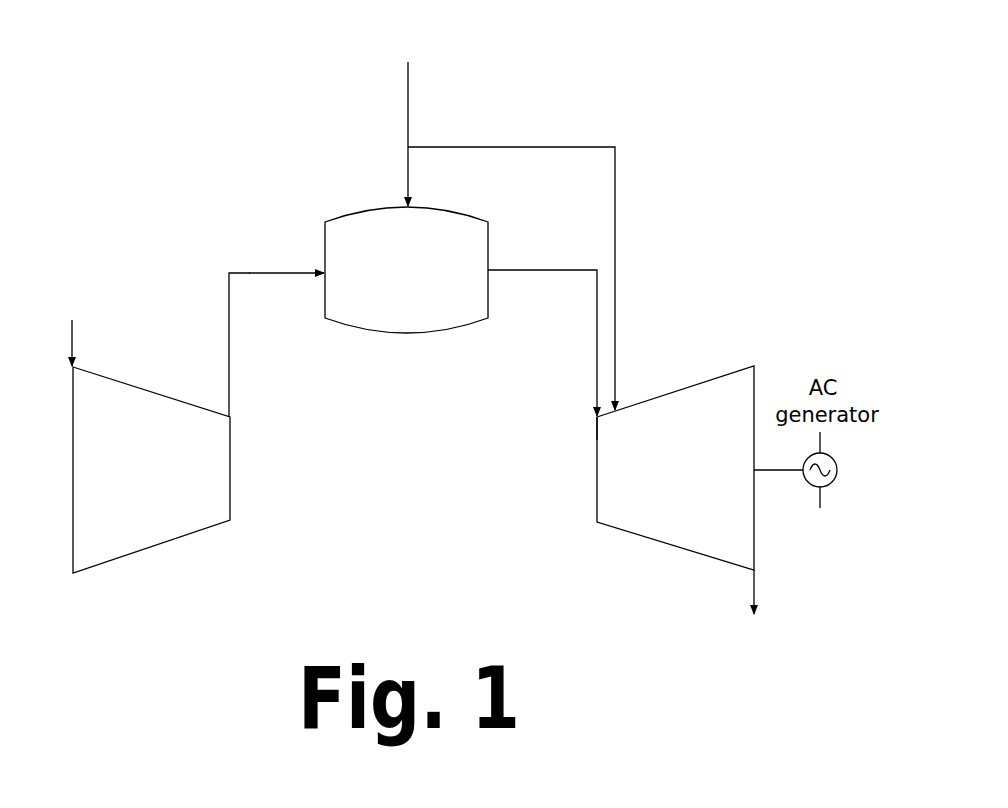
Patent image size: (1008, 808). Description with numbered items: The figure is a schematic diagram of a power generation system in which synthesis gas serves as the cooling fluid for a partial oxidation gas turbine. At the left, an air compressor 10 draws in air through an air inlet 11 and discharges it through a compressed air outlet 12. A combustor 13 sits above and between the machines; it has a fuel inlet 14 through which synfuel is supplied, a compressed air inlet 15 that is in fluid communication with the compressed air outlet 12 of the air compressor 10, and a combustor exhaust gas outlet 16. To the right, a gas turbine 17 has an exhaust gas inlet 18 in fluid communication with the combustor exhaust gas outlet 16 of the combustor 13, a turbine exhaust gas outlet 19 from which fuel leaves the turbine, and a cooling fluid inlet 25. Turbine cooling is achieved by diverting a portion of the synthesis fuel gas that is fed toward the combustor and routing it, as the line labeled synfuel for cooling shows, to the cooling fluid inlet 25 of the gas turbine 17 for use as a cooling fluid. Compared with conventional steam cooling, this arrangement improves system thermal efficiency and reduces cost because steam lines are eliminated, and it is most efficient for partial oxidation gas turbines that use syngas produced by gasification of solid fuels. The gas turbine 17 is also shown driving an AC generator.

The air compressor 10 is at (163, 543).
The air inlet 11 is at (73, 367).
The compressed air outlet 12 is at (230, 417).
The combustor 13 is at (325, 228).
The fuel inlet 14 is at (404, 206).
The compressed air inlet 15 is at (322, 266).
The combustor exhaust gas outlet 16 is at (488, 272).
The gas turbine 17 is at (728, 374).
The exhaust gas inlet 18 is at (597, 418).
The turbine exhaust gas outlet 19 is at (752, 570).
The cooling fluid inlet 25 is at (624, 408).